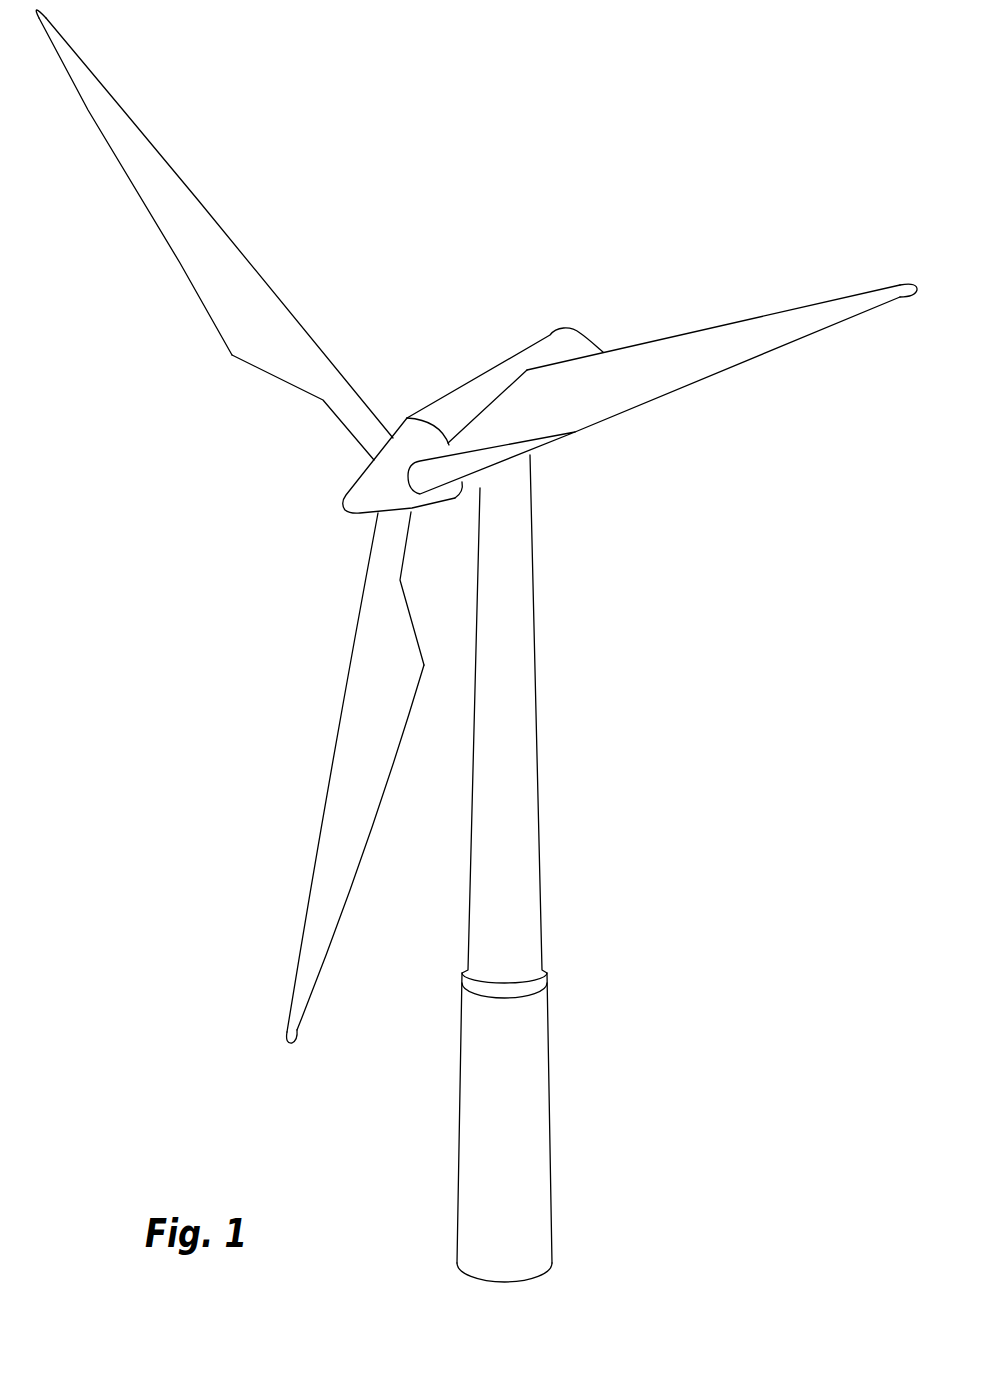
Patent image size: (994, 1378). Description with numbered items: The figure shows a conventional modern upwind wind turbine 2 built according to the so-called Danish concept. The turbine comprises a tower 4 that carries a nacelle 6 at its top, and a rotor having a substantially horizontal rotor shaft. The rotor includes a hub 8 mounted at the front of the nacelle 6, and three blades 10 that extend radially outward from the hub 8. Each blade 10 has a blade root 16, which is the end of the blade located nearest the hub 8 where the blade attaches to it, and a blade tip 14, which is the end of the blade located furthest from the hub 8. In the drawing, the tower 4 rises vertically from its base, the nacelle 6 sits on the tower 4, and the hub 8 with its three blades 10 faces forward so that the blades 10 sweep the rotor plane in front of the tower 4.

The wind turbine 2 is at (638, 800).
The tower 4 is at (523, 717).
The nacelle 6 is at (467, 397).
The hub 8 is at (367, 488).
The blade 10 is at (247, 327).
The blade tip 14 is at (80, 67).
The blade root 16 is at (375, 440).